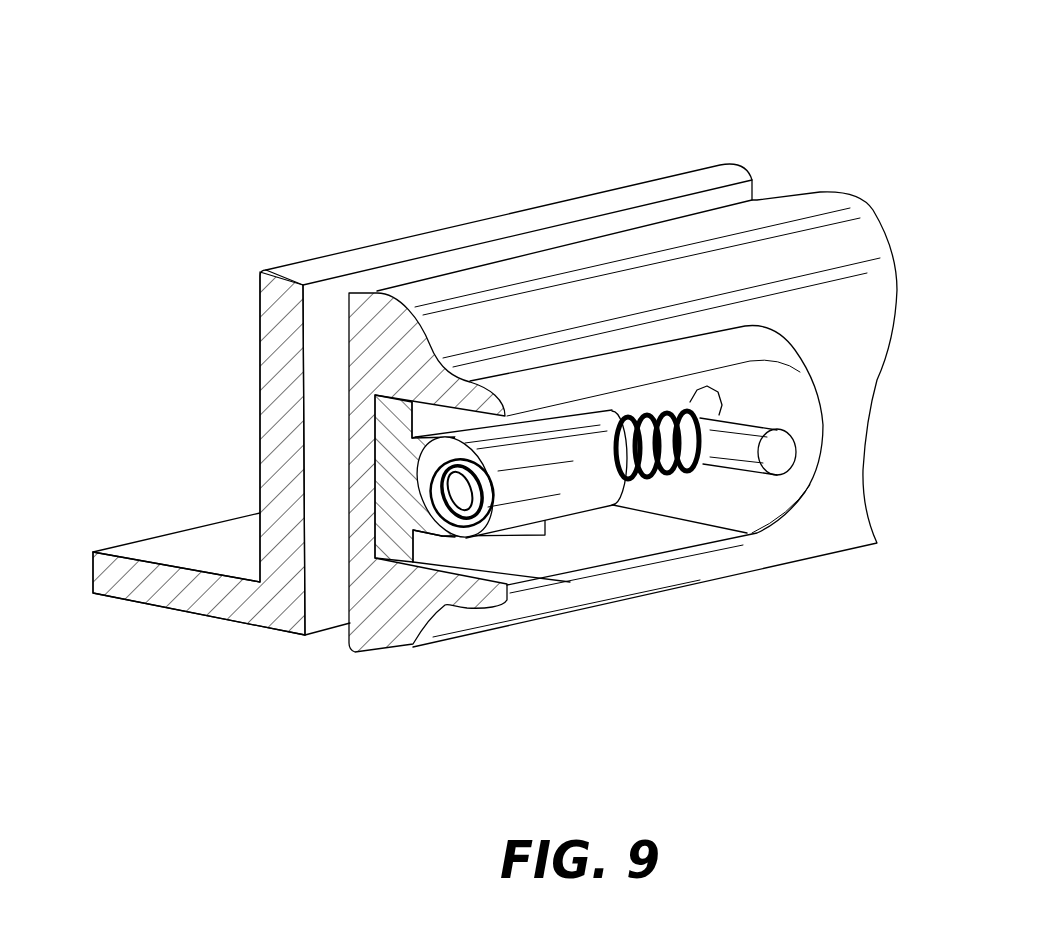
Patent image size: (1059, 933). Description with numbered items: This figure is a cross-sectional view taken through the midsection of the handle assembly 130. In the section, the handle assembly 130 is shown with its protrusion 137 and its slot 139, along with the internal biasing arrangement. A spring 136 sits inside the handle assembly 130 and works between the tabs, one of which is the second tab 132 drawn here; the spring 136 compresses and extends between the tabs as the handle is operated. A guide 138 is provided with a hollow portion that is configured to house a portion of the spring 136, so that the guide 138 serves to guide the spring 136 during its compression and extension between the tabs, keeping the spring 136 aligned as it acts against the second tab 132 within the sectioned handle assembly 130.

The handle assembly 130 is at (445, 79).
The second tab 132 is at (784, 446).
The spring 136 is at (440, 520).
The protrusion 137 is at (118, 558).
The guide 138 is at (567, 493).
The slot 139 is at (773, 168).